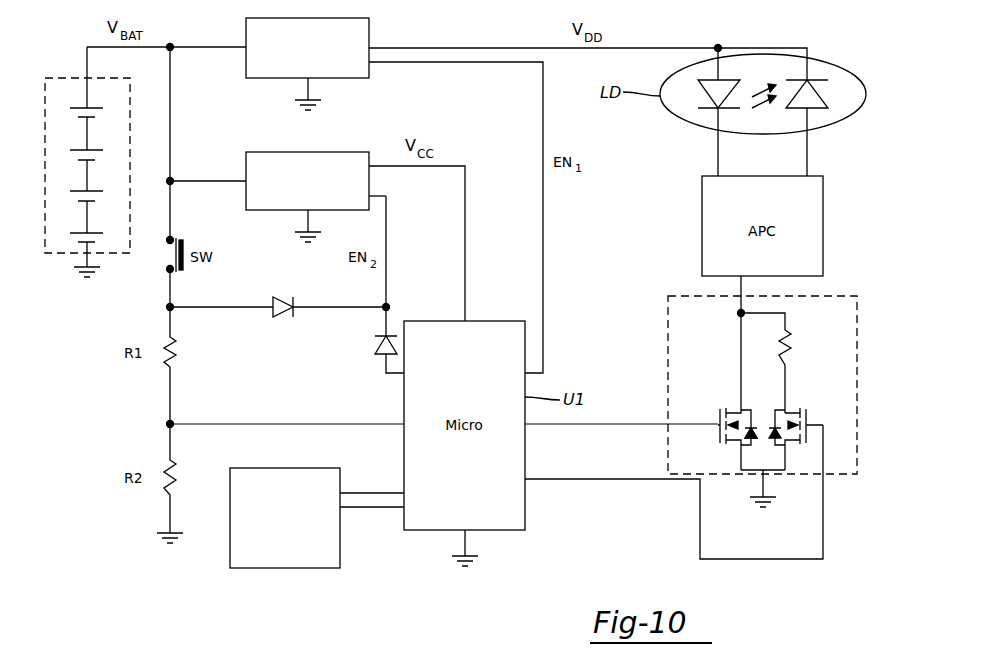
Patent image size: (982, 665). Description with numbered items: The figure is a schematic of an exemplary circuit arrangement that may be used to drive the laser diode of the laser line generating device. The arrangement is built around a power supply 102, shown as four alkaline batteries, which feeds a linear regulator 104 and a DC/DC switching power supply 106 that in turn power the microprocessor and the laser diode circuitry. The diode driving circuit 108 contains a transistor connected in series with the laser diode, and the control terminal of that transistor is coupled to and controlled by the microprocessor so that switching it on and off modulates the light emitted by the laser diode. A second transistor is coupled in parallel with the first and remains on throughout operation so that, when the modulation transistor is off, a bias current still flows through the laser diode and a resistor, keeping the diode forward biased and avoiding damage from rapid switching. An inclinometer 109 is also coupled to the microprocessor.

The power supply 102 is at (72, 78).
The linear regulator 104 is at (246, 163).
The DC/DC switching power supply 106 is at (246, 30).
The diode driving circuit 108 is at (668, 306).
The inclinometer 109 is at (230, 556).